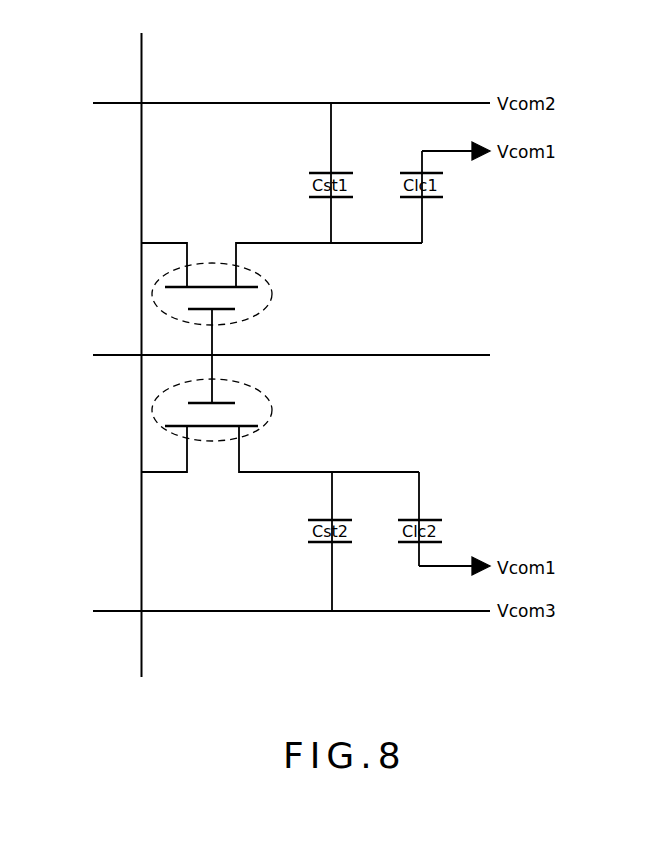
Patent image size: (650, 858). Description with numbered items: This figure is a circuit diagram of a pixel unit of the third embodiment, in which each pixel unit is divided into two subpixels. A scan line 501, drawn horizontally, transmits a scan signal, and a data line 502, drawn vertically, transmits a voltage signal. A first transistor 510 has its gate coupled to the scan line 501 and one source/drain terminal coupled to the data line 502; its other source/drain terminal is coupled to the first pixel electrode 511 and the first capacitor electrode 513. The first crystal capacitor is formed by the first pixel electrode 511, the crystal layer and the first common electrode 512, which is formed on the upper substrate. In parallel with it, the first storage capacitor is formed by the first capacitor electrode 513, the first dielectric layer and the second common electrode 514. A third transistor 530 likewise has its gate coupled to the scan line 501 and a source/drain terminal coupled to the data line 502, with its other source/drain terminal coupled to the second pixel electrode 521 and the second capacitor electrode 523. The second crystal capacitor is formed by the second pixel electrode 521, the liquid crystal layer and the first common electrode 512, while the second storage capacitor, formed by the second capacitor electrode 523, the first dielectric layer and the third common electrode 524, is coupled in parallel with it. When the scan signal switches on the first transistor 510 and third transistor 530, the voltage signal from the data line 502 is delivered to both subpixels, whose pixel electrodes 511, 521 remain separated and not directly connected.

The data line 502 is at (141, 68).
The scan line 501 is at (130, 354).
The first transistor 510 is at (267, 282).
The third transistor 530 is at (268, 400).
The second common electrode 514 is at (316, 172).
The first capacitor electrode 513 is at (316, 198).
The first common electrode 512 is at (406, 172).
The first pixel electrode 511 is at (406, 198).
The second capacitor electrode 523 is at (316, 519).
The third common electrode 524 is at (316, 543).
The second pixel electrode 521 is at (407, 519).